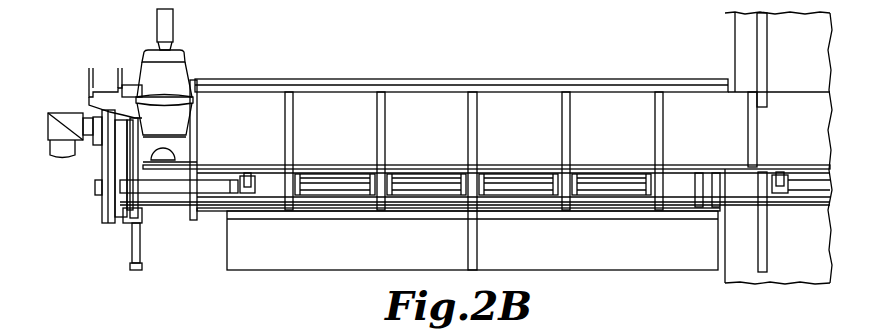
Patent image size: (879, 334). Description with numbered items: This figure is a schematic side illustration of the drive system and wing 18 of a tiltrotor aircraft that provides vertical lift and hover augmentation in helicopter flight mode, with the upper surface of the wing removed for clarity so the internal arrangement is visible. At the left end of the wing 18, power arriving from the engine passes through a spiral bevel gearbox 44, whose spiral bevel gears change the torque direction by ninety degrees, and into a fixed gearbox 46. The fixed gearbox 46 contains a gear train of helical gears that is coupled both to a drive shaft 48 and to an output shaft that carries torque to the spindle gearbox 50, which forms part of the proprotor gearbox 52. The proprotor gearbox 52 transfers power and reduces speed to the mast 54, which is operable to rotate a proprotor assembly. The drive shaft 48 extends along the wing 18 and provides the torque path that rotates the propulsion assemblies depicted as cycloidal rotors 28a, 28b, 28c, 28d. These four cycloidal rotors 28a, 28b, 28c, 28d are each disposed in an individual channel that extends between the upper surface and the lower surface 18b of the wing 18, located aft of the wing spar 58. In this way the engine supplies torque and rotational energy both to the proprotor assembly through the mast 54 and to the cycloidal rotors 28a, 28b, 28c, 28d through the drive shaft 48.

The wing 18 is at (331, 80).
The lower surface 18b is at (421, 112).
The cycloidal rotor 28a is at (332, 185).
The cycloidal rotor 28b is at (428, 185).
The cycloidal rotor 28c is at (524, 185).
The cycloidal rotor 28d is at (614, 185).
The spiral bevel gearbox 44 is at (62, 114).
The fixed gearbox 46 is at (100, 218).
The drive shaft 48 is at (163, 182).
The spindle gearbox 50 is at (152, 148).
The proprotor gearbox 52 is at (184, 52).
The mast 54 is at (156, 28).
The wing spar 58 is at (600, 166).